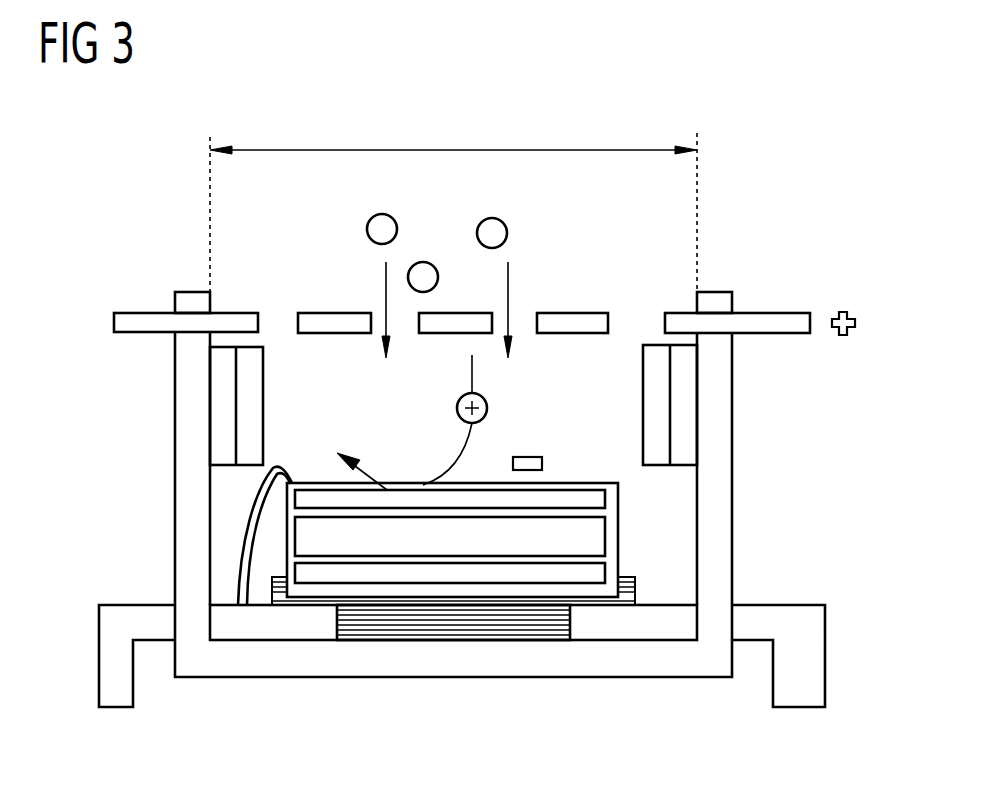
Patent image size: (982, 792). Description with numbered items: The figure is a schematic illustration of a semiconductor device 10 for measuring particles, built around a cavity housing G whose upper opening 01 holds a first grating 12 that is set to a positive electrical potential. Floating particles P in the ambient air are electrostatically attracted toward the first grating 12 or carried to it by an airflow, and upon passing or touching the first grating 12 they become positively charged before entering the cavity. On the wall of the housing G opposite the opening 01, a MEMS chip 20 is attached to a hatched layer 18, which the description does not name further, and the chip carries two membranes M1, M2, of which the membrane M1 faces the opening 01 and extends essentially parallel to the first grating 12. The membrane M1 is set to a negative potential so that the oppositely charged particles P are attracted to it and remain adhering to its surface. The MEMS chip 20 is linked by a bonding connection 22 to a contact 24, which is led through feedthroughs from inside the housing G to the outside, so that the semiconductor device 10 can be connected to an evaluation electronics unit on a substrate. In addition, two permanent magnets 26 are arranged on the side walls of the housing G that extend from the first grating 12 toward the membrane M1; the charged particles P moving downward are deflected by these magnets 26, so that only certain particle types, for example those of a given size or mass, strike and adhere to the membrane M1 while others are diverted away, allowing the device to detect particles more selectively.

The semiconductor device 10 is at (778, 133).
The first grating 12 is at (147, 323).
The heating base 18 is at (450, 637).
The MEMS chip 20 is at (479, 534).
The bonding connection 22 is at (285, 468).
The contact 24 is at (108, 656).
The magnets 26 is at (262, 373).
The membrane M1 is at (598, 501).
The membrane M2 is at (598, 575).
The particles P is at (423, 262).
The cavity housing G is at (713, 300).
The opening 01 is at (453, 200).